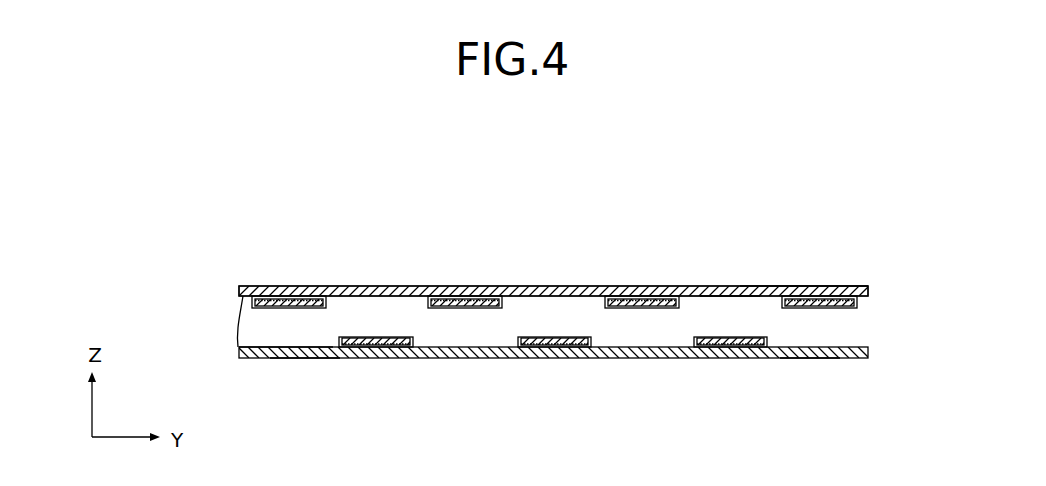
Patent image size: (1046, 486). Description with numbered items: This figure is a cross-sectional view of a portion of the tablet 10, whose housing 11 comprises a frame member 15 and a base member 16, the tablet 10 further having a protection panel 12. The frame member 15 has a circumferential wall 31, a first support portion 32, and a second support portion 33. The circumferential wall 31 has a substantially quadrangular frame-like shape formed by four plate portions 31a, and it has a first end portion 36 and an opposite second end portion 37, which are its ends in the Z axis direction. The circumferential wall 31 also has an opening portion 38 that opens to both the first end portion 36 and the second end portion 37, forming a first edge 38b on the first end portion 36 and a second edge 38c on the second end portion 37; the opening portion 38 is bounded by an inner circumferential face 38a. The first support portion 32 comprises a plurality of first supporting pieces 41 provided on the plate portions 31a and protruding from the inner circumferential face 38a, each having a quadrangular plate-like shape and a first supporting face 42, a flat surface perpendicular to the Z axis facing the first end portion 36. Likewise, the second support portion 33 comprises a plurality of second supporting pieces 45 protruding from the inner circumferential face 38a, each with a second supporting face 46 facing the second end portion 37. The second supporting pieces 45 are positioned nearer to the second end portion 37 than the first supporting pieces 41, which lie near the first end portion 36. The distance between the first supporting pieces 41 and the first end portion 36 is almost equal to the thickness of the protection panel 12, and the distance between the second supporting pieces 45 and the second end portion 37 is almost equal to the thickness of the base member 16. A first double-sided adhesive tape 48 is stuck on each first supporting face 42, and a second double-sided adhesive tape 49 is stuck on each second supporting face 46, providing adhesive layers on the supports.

The tablet 10 is at (351, 226).
The housing 11 is at (333, 420).
The protection panel 12 is at (393, 286).
The frame member 15 is at (258, 334).
The base member 16 is at (305, 359).
The circumferential wall 31 is at (440, 329).
The plate portions 31a is at (474, 326).
The first support portion 32 is at (613, 210).
The second support portion 33 is at (697, 418).
The first end portion 36 is at (823, 287).
The second end portion 37 is at (836, 359).
The opening portion 38 is at (706, 306).
The inner circumferential face 38a is at (737, 310).
The first edge 38b is at (766, 287).
The second edge 38c is at (810, 359).
The first supporting pieces 41 is at (262, 296).
The first supporting face 42 is at (288, 296).
The second supporting pieces 45 is at (344, 359).
The second supporting face 46 is at (370, 359).
The first double-sided adhesive tape 48 is at (252, 292).
The second double-sided adhesive tape 49 is at (550, 359).